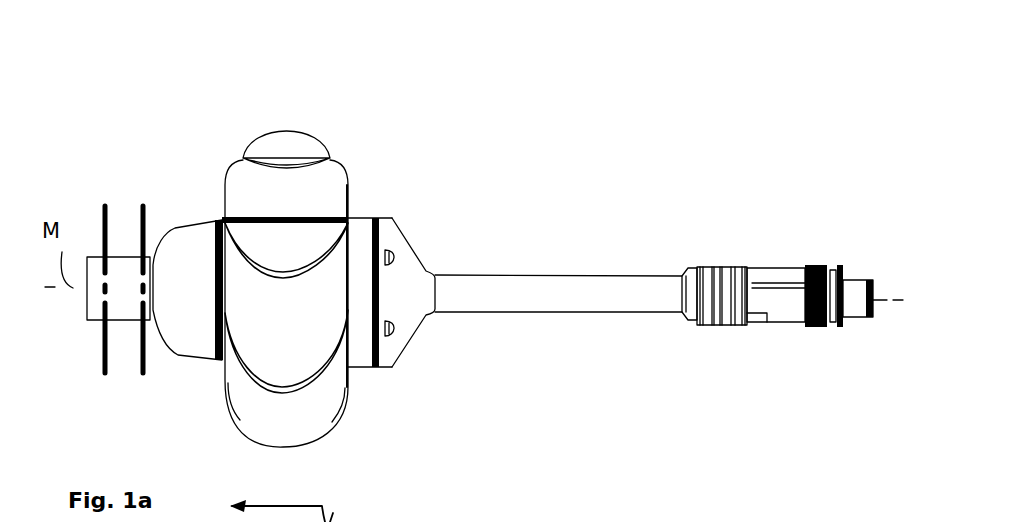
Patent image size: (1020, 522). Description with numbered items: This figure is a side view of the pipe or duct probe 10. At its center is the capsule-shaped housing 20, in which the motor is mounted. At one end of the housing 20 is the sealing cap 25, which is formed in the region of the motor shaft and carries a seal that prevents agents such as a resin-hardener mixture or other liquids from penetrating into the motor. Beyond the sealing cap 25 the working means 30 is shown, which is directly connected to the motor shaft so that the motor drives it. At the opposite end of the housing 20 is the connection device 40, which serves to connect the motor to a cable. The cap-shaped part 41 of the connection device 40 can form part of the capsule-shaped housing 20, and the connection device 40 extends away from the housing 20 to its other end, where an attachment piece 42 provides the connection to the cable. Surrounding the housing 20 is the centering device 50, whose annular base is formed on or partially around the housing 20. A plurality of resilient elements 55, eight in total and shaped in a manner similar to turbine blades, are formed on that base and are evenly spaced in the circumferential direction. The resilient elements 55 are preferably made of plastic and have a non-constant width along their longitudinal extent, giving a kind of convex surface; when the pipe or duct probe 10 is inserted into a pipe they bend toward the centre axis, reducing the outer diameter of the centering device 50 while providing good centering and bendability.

The pipe or duct probe 10 is at (168, 99).
The housing 20 is at (362, 225).
The sealing cap 25 is at (178, 343).
The working means 30 is at (103, 168).
The connection device 40 is at (586, 235).
The cap-shaped part 41 is at (408, 262).
The attachment piece 42 is at (853, 278).
The centering device 50 is at (318, 108).
The resilient elements 55 is at (270, 145).